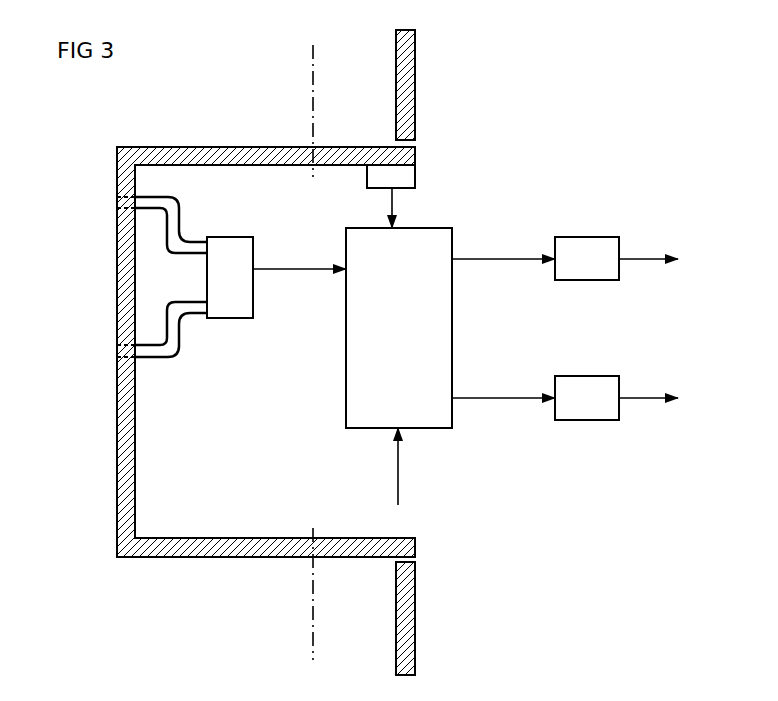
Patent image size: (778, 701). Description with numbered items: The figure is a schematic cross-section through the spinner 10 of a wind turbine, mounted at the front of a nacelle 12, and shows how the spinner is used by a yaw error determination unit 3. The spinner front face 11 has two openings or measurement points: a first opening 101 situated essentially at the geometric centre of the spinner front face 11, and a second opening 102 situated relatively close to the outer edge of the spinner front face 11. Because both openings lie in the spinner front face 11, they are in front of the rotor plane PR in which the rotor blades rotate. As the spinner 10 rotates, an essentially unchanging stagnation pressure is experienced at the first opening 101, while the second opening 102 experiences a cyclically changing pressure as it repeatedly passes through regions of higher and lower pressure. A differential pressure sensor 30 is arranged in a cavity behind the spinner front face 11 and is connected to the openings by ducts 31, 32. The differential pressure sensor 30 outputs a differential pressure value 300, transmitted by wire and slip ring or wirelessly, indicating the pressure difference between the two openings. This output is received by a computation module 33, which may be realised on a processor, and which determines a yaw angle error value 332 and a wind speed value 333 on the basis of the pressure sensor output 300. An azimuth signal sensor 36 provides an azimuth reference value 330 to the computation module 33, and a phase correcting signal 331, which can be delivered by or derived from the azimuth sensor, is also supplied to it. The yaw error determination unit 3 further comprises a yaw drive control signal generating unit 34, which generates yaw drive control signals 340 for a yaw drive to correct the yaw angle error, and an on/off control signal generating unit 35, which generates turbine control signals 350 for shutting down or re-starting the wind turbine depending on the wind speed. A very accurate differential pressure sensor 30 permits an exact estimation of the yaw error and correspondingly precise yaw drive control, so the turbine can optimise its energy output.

The yaw error determination unit 3 is at (550, 528).
The spinner 10 is at (234, 322).
The spinner front face 11 is at (117, 468).
The nacelle 12 is at (408, 90).
The first opening 101 is at (117, 353).
The second opening 102 is at (117, 201).
The differential pressure sensor 30 is at (231, 305).
The duct 31 is at (170, 346).
The duct 32 is at (172, 221).
The computation module 33 is at (346, 383).
The yaw drive control signal generating unit 34 is at (588, 282).
The on/off control signal generating unit 35 is at (588, 422).
The azimuth signal sensor 36 is at (405, 175).
The differential pressure value 300 is at (292, 268).
The azimuth reference value 330 is at (392, 196).
The phase correcting signal 331 is at (398, 470).
The yaw angle error value 332 is at (517, 257).
The wind speed value 333 is at (500, 400).
The yaw drive control signal 340 is at (640, 256).
The turbine control signal 350 is at (640, 395).
The rotor plane PR is at (315, 610).